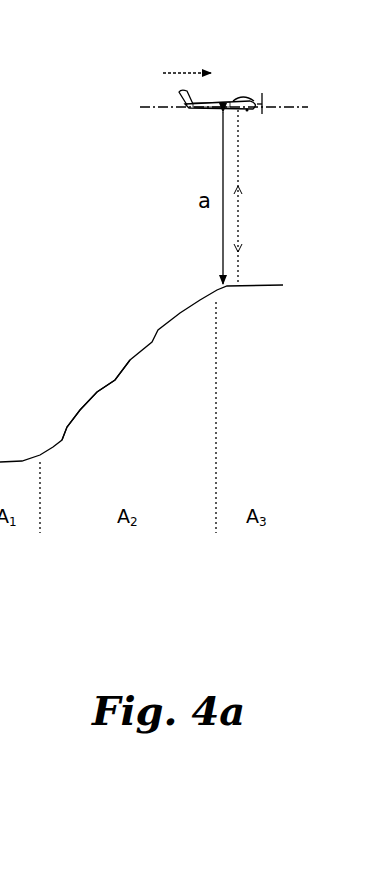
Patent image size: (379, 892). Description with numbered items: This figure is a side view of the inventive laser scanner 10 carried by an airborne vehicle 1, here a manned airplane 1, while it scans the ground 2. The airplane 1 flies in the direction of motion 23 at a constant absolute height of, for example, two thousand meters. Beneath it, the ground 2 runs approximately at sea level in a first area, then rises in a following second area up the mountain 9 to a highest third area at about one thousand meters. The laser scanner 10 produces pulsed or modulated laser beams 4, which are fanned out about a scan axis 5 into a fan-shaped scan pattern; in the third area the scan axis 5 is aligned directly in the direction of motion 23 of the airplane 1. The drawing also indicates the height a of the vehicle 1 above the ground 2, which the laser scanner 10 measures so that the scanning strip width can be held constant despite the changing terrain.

The airborne vehicle 1 is at (253, 72).
The ground 2 is at (152, 417).
The laser beams 4 is at (241, 223).
The scan axis 5 is at (285, 107).
The mountain 9 is at (67, 372).
The laser scanner 10 is at (249, 116).
The direction of motion 23 is at (185, 72).